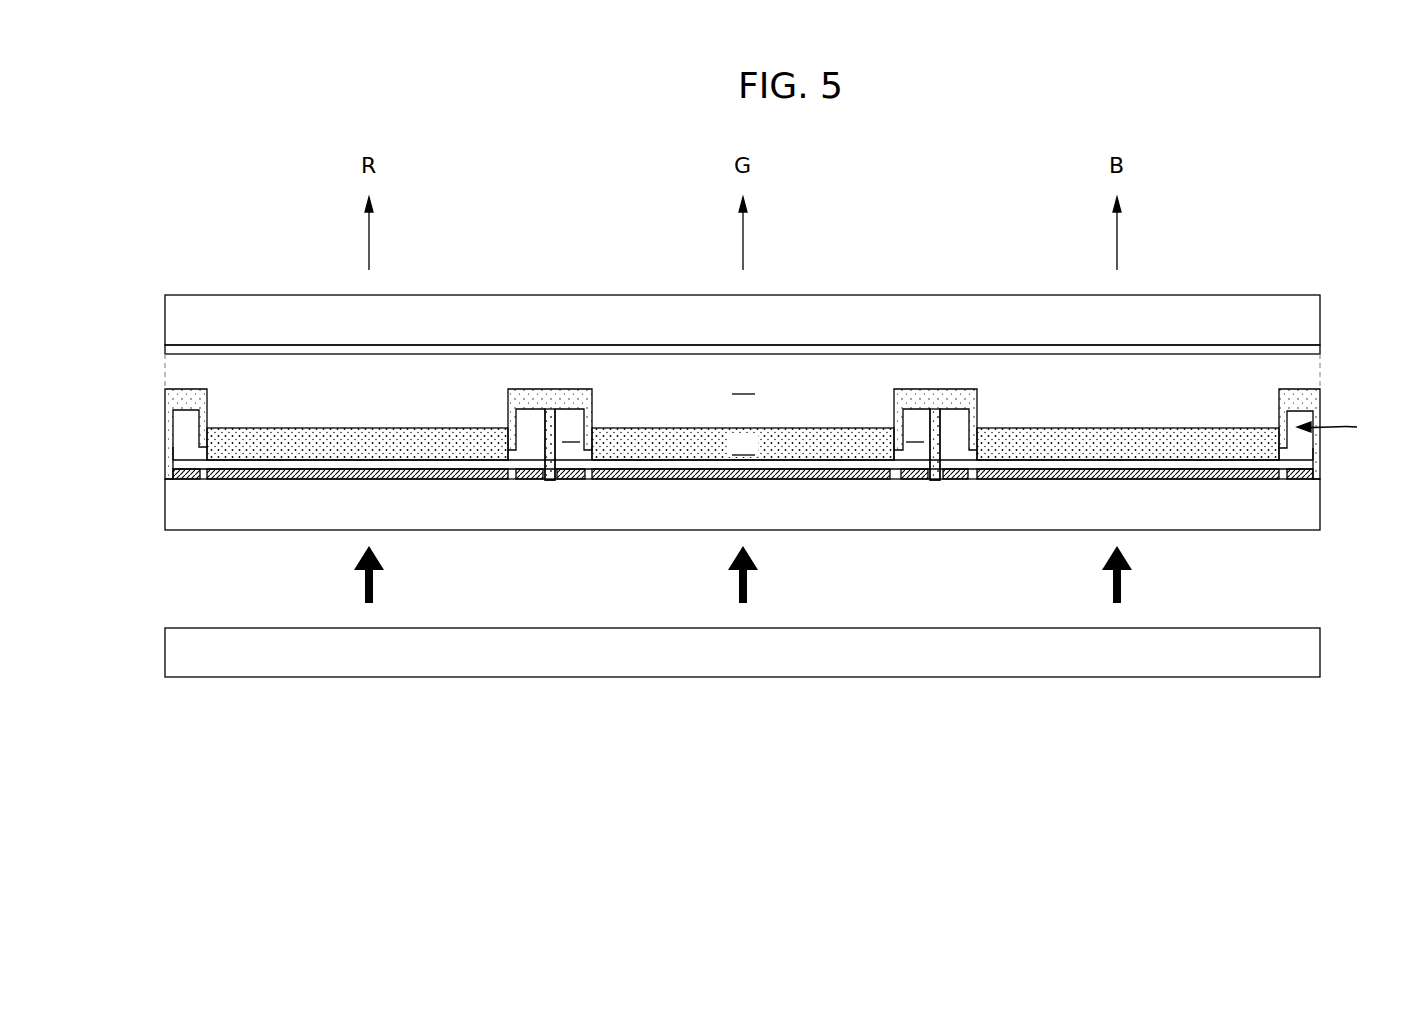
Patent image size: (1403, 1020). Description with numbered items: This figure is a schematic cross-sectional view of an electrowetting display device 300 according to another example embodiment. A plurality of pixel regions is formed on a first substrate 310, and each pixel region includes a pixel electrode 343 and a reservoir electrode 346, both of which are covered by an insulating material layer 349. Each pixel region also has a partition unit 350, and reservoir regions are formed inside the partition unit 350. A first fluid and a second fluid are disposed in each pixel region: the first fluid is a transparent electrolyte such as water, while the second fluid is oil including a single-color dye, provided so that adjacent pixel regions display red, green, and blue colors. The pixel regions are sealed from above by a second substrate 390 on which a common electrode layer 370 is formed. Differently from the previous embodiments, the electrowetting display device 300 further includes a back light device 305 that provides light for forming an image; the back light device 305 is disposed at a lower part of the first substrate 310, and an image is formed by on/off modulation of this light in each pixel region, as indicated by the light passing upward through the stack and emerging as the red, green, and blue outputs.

The electrowetting display device 300 is at (1322, 222).
The back light device 305 is at (1310, 648).
The first substrate 310 is at (1310, 500).
The pixel electrode 343 is at (785, 478).
The reservoir electrode 346 is at (570, 480).
The insulating material layer 349 is at (843, 465).
The partition unit 350 is at (913, 395).
The common electrode layer 370 is at (1310, 350).
The second substrate 390 is at (1310, 316).